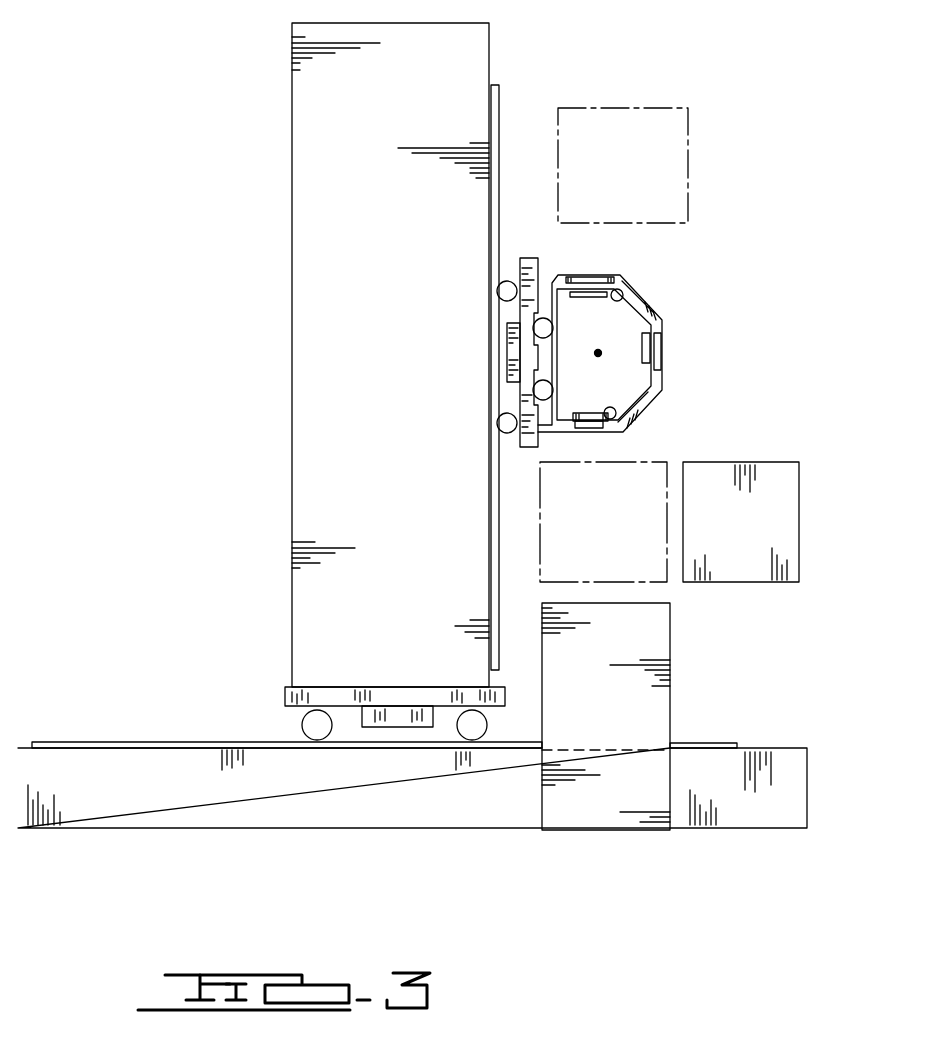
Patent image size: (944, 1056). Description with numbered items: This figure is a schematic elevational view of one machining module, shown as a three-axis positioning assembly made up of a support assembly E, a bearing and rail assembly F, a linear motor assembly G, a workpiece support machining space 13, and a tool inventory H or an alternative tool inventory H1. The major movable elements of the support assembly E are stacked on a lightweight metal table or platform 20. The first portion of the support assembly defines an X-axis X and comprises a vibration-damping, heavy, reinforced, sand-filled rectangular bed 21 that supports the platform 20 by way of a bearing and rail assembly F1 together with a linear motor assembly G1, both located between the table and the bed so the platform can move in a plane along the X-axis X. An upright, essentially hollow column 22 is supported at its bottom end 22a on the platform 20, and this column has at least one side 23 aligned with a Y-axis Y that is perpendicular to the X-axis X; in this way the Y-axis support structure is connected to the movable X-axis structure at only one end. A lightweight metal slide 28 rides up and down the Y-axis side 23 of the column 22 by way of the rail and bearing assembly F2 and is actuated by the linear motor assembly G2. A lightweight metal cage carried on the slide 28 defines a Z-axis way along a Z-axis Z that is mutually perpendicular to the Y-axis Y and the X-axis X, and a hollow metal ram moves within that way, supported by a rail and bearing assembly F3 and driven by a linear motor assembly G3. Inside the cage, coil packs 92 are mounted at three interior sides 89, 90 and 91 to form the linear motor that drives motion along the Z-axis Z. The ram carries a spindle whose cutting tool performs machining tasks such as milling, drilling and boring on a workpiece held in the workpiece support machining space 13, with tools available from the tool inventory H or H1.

The workpiece support machining space 13 is at (655, 461).
The platform 20 is at (285, 692).
The bed 21 is at (140, 805).
The column 22 is at (321, 350).
The bottom end of column 22a is at (440, 693).
The side of column 23 is at (489, 68).
The slide 28 is at (527, 256).
The interior side of cage 89 is at (622, 300).
The interior side of cage 90 is at (658, 332).
The interior side of cage 91 is at (597, 430).
The coil packs 92 is at (594, 354).
The support assembly E is at (780, 747).
The bearing and rail assembly F is at (320, 706).
The bearing and rail assembly F1 is at (492, 718).
The rail and bearing assembly F2 is at (505, 283).
The rail and bearing assembly F3 is at (578, 256).
The linear motor assembly G is at (538, 327).
The linear motor assembly G1 is at (385, 727).
The linear motor assembly G2 is at (524, 362).
The linear motor assembly G3 is at (642, 380).
The tool inventory H is at (688, 130).
The tool inventory H1 is at (783, 582).
The X-axis X is at (220, 788).
The Y-axis Y is at (400, 442).
The Z-axis Z is at (593, 340).